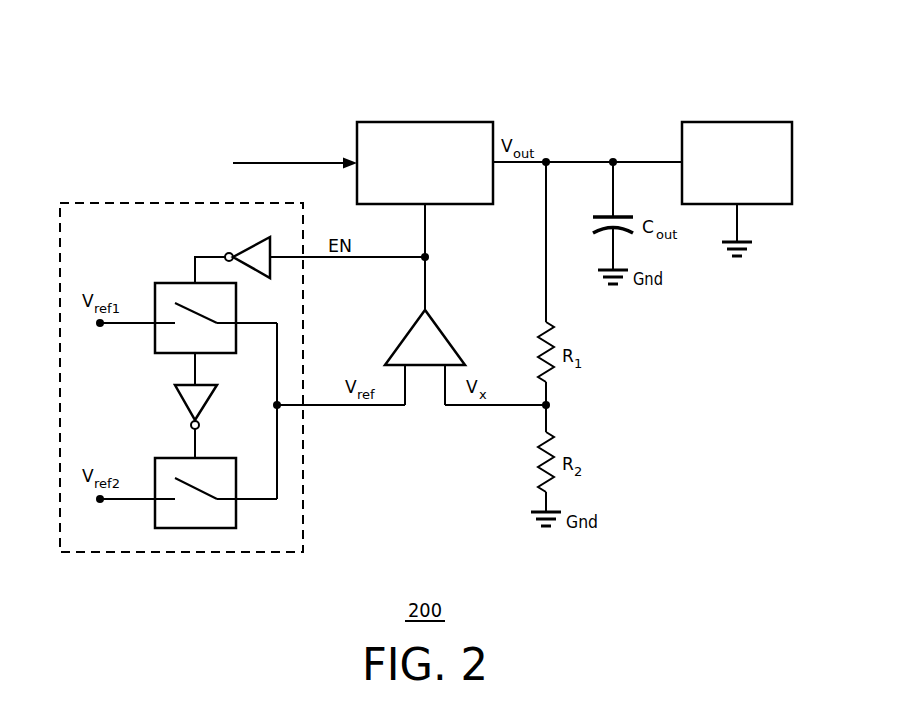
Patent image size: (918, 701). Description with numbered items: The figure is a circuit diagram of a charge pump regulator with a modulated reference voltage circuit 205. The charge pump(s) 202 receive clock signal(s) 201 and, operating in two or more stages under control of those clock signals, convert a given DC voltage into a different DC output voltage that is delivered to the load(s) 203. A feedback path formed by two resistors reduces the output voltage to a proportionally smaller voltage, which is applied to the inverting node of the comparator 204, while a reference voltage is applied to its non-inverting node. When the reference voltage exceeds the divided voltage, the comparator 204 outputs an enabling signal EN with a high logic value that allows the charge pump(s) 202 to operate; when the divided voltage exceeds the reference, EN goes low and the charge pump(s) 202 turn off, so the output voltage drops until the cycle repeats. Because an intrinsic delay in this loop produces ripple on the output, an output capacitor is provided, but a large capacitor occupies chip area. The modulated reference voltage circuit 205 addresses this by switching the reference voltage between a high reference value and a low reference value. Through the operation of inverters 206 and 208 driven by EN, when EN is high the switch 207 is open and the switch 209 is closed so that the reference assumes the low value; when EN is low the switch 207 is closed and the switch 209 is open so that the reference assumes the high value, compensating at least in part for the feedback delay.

The clock signal(s) 201 is at (283, 108).
The charge pump(s) 202 is at (463, 121).
The load(s) 203 is at (760, 121).
The comparator 204 is at (453, 340).
The modulated reference voltage circuit 205 is at (99, 202).
The inverter 206 is at (253, 243).
The switch 207 is at (168, 282).
The inverter 208 is at (212, 395).
The switch 209 is at (168, 457).